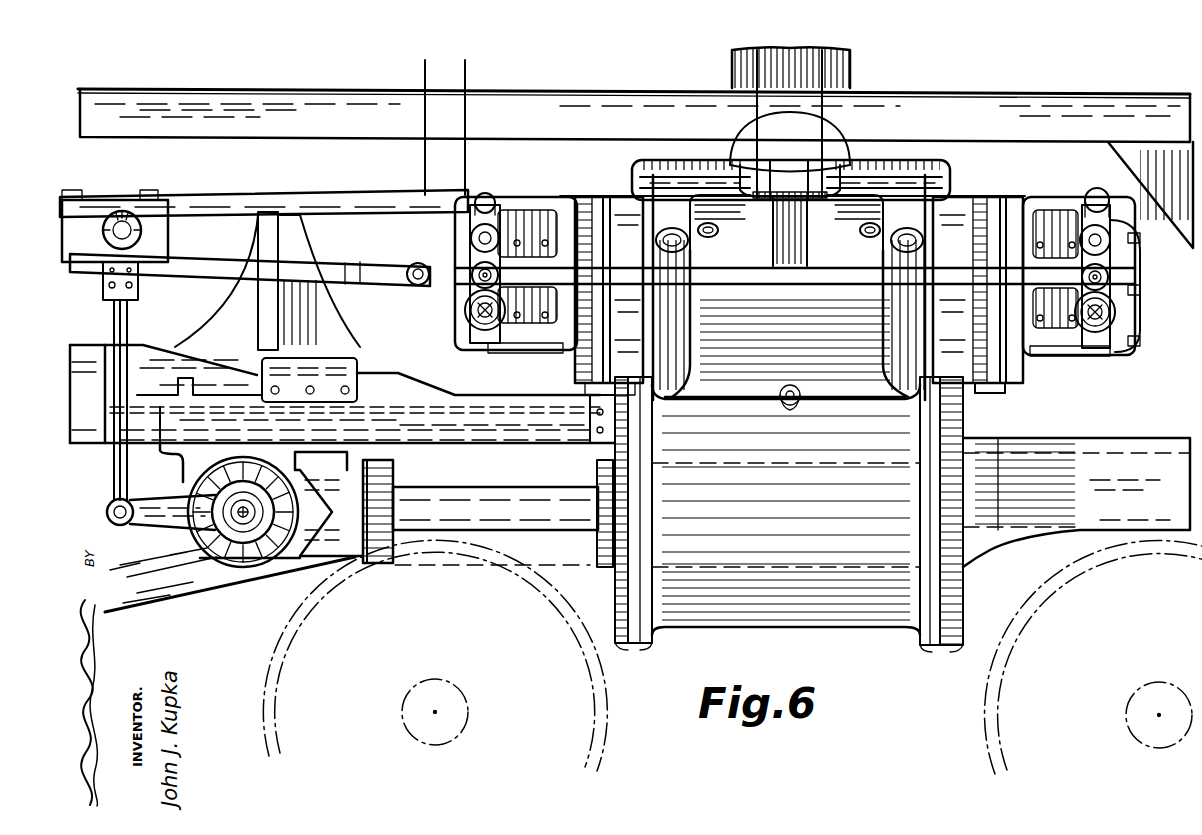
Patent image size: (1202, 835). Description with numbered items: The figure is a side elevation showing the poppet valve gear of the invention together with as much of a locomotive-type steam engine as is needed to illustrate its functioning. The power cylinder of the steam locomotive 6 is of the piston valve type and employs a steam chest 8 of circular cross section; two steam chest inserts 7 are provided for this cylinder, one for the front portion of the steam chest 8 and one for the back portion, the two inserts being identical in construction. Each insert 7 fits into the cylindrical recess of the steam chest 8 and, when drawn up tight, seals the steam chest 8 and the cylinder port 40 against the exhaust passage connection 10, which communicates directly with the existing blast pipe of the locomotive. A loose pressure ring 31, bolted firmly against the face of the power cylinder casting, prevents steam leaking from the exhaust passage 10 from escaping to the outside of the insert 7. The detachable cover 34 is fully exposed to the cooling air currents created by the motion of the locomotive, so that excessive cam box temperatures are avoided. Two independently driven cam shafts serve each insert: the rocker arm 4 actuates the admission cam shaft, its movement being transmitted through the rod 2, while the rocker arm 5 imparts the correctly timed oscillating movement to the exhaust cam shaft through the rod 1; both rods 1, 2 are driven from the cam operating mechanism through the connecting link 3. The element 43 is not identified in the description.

The rod 1 is at (727, 275).
The rod 2 is at (550, 193).
The connecting link 3 is at (334, 268).
The rocker arm 4 is at (485, 194).
The rocker arm 5 is at (462, 303).
The steam locomotive cylinder 6 is at (822, 615).
The steam chest insert 7 is at (500, 352).
The steam chest 8 is at (773, 348).
The exhaust passage connection 10 is at (799, 296).
The pressure ring 31 is at (1010, 380).
The detachable cover 34 is at (1126, 240).
The cylinder port 40 is at (672, 372).
The lever bar 43 is at (282, 196).